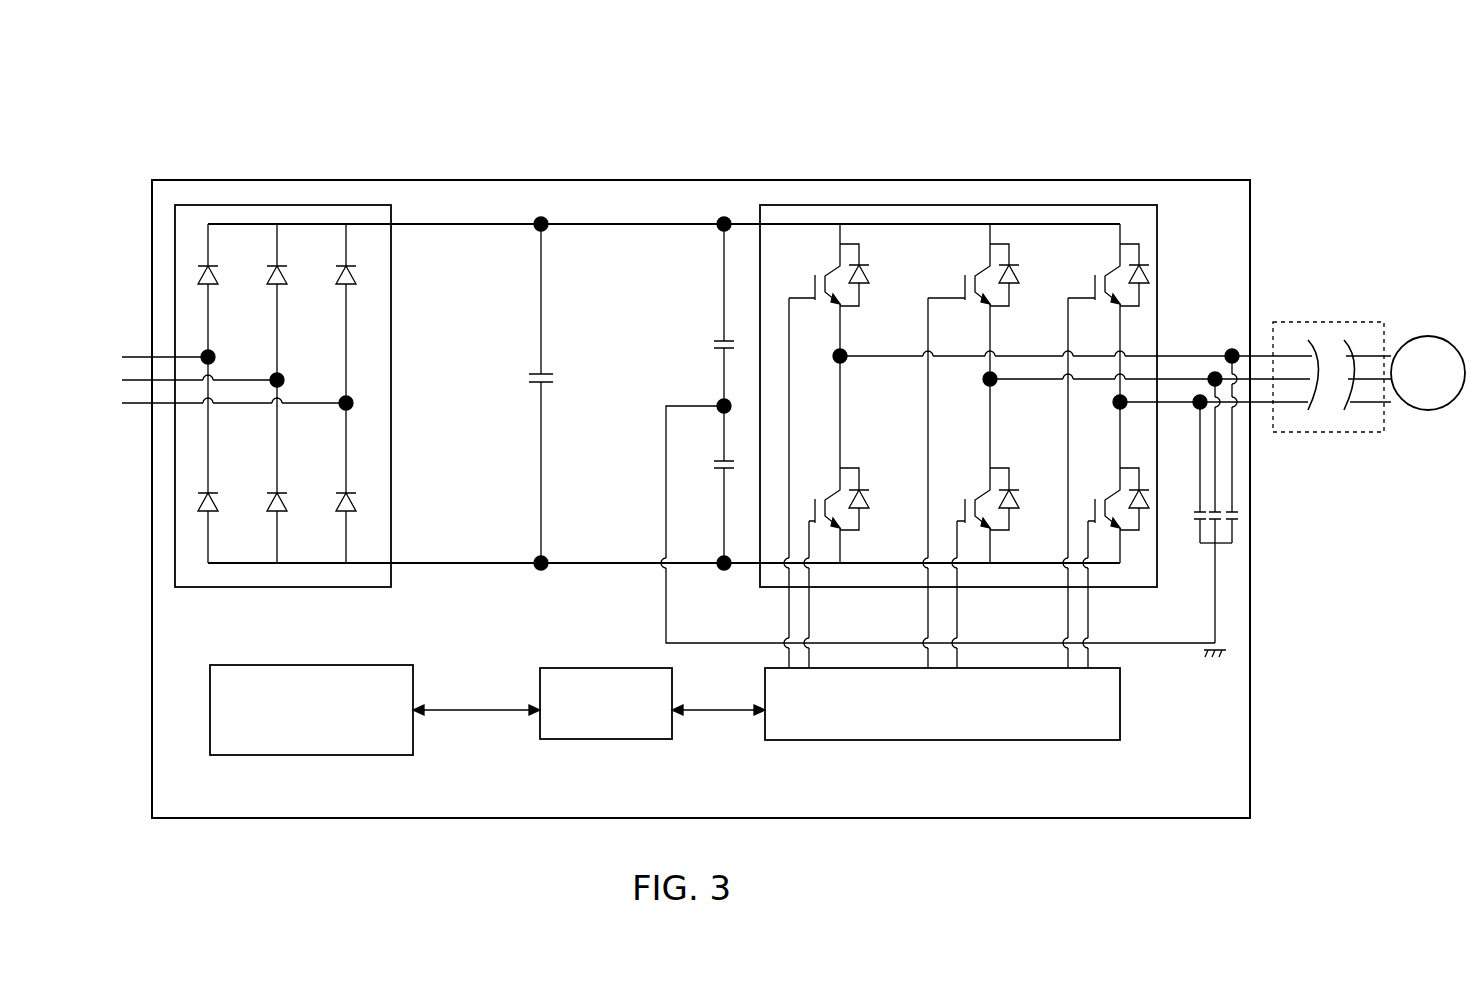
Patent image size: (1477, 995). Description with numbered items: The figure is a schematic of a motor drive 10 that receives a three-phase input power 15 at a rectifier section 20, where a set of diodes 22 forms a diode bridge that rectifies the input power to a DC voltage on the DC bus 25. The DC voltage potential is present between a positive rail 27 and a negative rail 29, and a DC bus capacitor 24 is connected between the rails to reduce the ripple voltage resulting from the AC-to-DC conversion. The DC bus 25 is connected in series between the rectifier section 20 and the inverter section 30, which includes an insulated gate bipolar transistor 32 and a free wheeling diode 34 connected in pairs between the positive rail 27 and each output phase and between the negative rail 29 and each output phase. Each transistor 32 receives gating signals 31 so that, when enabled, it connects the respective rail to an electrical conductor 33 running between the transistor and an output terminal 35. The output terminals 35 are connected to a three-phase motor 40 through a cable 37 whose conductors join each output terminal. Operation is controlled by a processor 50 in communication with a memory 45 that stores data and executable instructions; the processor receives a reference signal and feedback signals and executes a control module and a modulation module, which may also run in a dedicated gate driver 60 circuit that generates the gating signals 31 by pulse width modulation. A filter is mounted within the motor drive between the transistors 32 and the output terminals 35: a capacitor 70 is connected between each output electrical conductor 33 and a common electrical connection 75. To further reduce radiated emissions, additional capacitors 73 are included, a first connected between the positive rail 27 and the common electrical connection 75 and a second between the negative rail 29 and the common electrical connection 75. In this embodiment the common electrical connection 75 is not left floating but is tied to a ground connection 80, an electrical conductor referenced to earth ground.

The motor drive 10 is at (222, 118).
The three-phase input power 15 is at (129, 352).
The rectifier section 20 is at (334, 588).
The diodes 22 is at (362, 276).
The DC bus capacitor 24 is at (535, 388).
The DC bus 25 is at (420, 220).
The positive rail 27 is at (428, 226).
The negative rail 29 is at (432, 562).
The inverter section 30 is at (1027, 204).
The gating signals 31 is at (808, 622).
The insulated gate bipolar transistor 32 is at (830, 267).
The electrical conductor 33 is at (856, 356).
The free wheeling diode 34 is at (874, 276).
The output terminal 35 is at (1259, 354).
The cable 37 is at (1338, 436).
The motor 40 is at (1412, 336).
The memory 45 is at (268, 757).
The processor 50 is at (608, 742).
The gate driver 60 is at (972, 742).
The capacitor 70 is at (1206, 526).
The additional capacitor 73 is at (716, 346).
The common electrical connection 75 is at (1224, 550).
The ground connection 80 is at (1235, 648).